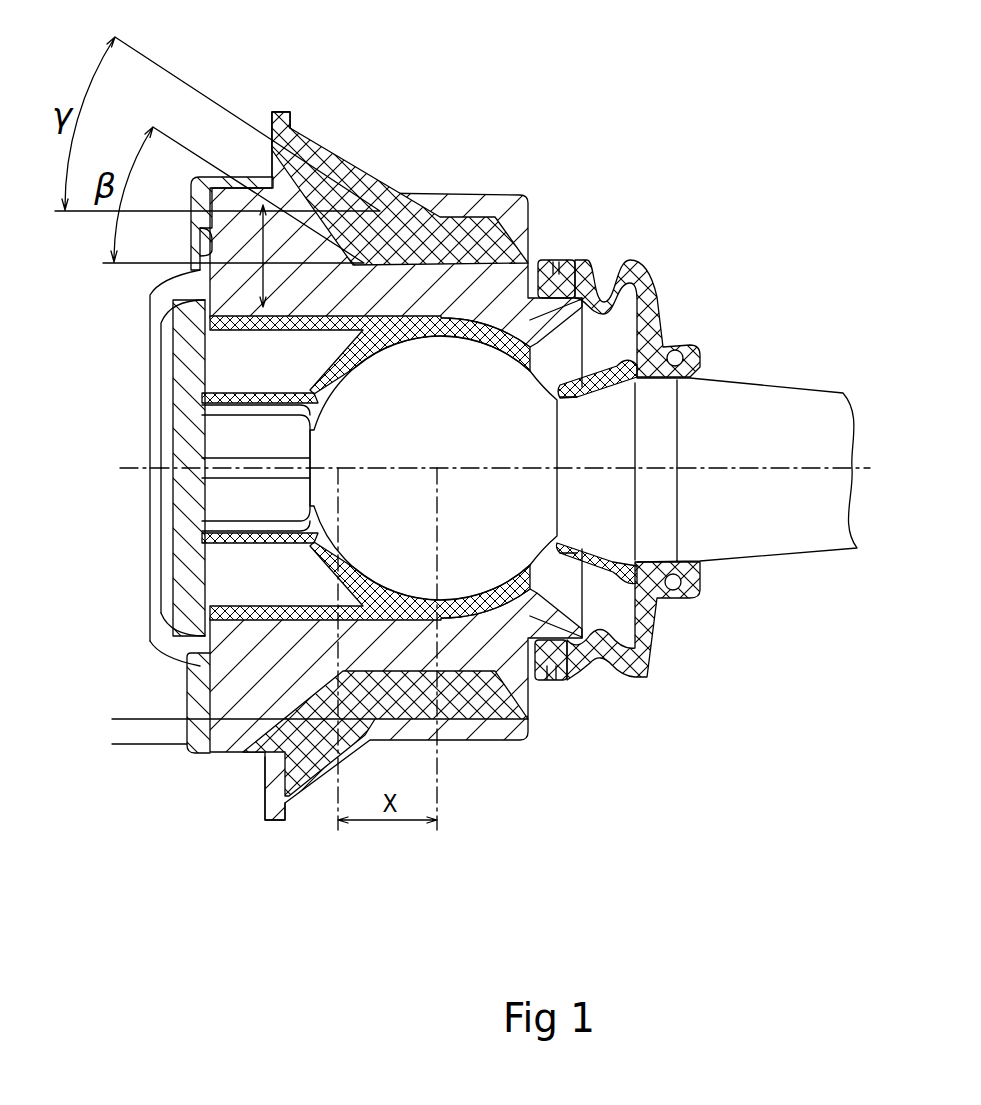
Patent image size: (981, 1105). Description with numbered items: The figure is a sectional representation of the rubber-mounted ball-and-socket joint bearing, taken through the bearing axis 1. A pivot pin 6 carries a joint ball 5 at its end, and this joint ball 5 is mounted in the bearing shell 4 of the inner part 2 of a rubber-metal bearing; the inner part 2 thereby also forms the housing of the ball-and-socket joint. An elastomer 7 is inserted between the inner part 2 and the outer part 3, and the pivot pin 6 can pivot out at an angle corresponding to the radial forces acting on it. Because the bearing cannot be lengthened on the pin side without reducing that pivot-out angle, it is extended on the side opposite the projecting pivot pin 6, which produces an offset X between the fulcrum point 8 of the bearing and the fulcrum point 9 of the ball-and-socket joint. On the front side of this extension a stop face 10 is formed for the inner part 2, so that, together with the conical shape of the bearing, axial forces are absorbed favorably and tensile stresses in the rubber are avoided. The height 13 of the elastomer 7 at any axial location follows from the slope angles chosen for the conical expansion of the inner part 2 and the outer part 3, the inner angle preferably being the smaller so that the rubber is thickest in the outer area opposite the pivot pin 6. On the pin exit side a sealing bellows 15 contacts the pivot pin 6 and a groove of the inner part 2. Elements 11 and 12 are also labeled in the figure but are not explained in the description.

The bearing axis 1 is at (808, 455).
The inner part 2 is at (491, 290).
The outer part 3 is at (289, 147).
The bearing shell 4 is at (460, 610).
The joint ball 5 is at (548, 680).
The pivot pin 6 is at (748, 424).
The elastomer 7 is at (432, 242).
The fulcrum point of the bearing 8 is at (340, 455).
The fulcrum point of the ball-and-socket joint 9 is at (438, 455).
The stop face 10 is at (186, 704).
The lower cover line 11 is at (127, 761).
The cover disk 12 is at (126, 704).
The height of the elastomer 13 is at (247, 257).
The sealing bellows 15 is at (648, 322).